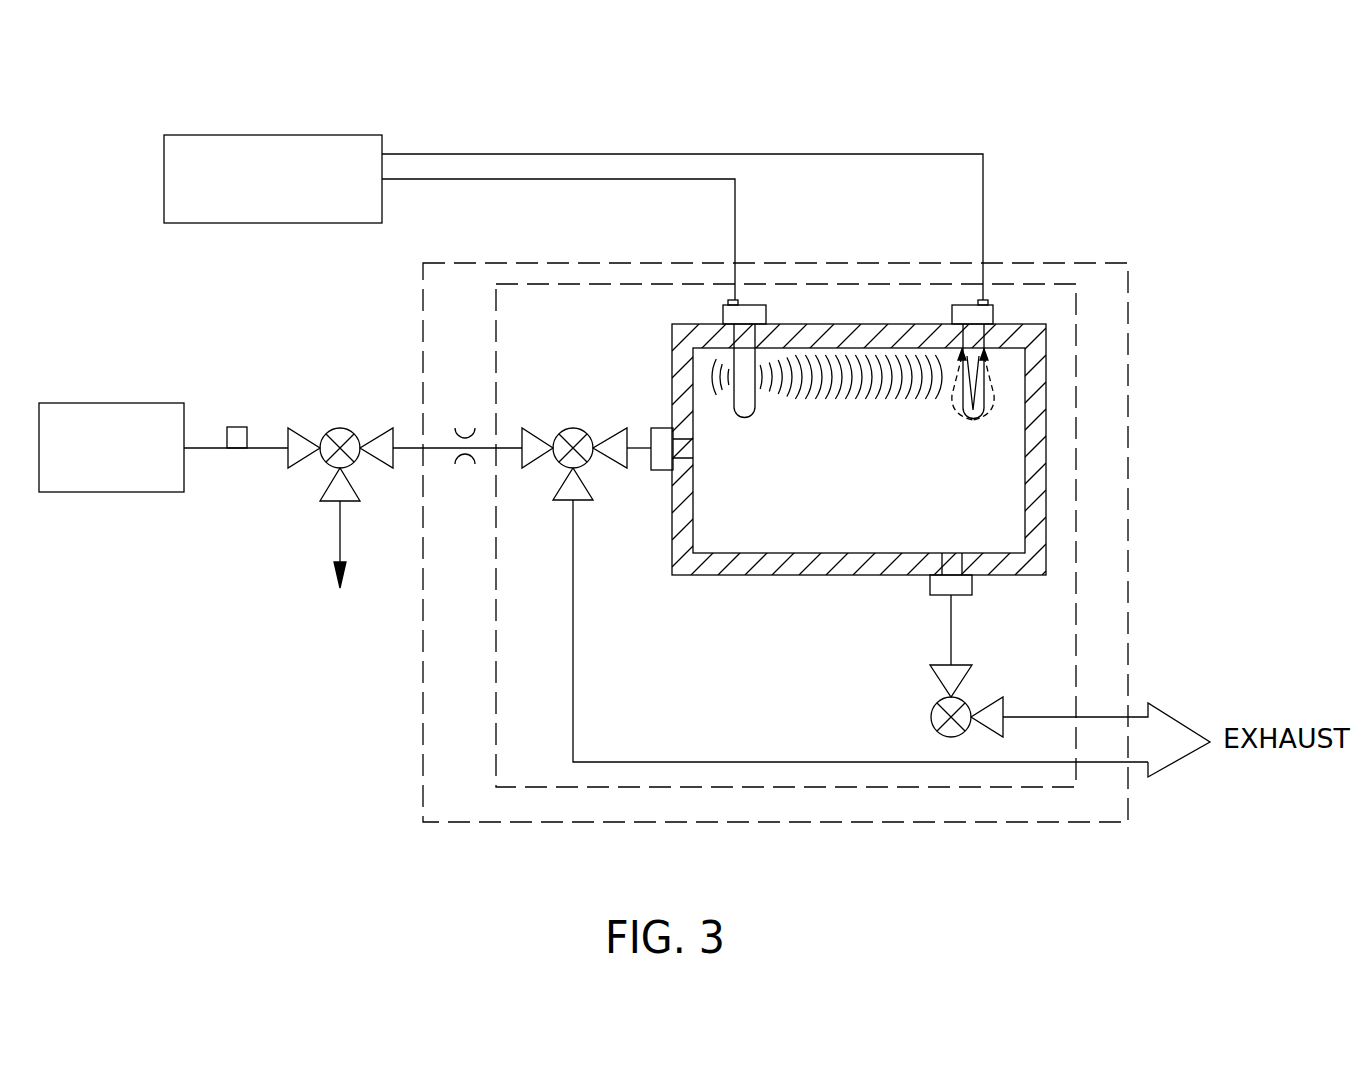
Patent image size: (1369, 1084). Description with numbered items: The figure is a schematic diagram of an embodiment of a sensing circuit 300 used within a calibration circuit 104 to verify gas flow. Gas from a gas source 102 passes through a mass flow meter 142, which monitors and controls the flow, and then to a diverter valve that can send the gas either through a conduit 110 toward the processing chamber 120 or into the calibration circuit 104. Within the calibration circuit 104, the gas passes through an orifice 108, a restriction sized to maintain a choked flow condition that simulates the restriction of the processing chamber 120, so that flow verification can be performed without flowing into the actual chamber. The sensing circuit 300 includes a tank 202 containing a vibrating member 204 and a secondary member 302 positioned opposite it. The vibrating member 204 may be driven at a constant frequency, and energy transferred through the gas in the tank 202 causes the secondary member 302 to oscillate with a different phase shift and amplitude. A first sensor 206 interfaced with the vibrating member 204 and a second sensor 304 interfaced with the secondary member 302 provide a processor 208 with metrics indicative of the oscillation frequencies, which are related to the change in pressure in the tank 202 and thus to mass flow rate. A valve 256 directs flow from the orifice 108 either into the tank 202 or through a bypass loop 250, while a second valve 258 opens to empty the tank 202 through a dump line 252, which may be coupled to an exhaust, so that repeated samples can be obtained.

The gas source 102 is at (97, 403).
The calibration circuit 104 is at (1010, 263).
The orifice 108 is at (465, 428).
The conduit 110 is at (340, 533).
The processing chamber 120 is at (340, 632).
The mass flow meter 142 is at (238, 427).
The tank 202 is at (1035, 467).
The vibrating member 204 is at (745, 418).
The first sensor 206 is at (726, 301).
The processor 208 is at (294, 135).
The bypass loop 250 is at (573, 622).
The dump line 252 is at (951, 622).
The valve 256 is at (573, 428).
The second valve 258 is at (930, 717).
The sensing circuit 300 is at (1078, 364).
The secondary member 302 is at (973, 420).
The second sensor 304 is at (978, 301).